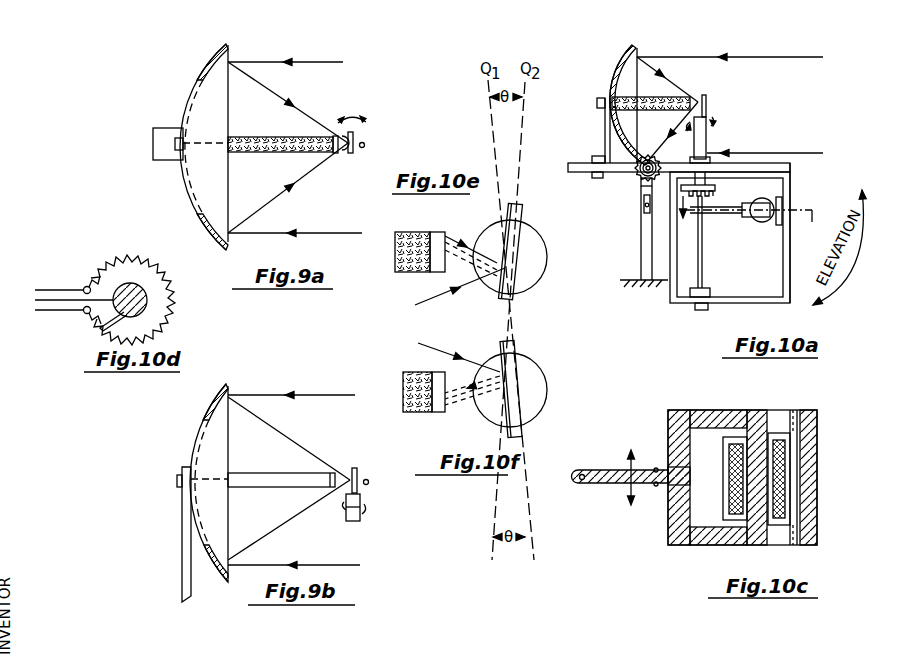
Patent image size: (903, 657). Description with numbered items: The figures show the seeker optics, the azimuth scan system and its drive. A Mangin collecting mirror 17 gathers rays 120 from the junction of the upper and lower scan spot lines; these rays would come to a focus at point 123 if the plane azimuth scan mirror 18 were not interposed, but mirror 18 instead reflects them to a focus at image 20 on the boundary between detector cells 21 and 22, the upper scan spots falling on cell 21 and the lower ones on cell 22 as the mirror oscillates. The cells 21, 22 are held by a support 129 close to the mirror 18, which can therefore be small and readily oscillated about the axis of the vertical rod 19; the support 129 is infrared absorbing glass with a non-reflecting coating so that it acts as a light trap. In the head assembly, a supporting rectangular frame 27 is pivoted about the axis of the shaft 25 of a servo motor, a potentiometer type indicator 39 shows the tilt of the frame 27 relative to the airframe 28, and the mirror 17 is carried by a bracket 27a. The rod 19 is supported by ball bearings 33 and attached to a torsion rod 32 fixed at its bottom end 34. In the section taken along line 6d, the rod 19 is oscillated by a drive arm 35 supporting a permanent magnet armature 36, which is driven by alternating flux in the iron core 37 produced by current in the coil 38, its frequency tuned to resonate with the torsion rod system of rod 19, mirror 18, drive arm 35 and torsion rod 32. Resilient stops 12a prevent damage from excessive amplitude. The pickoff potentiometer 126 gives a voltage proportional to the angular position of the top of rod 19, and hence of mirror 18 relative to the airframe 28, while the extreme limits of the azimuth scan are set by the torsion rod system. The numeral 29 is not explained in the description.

In FIG. 9a, the Mangin collecting mirror 17 is at (226, 48).
In FIG. 9b, the Mangin collecting mirror 17 is at (232, 384).
In FIG. 10a, the Mangin collecting mirror 17 is at (630, 50).
In FIG. 9a, the rays 120 is at (317, 60).
In FIG. 9b, the rays 120 is at (336, 394).
In FIG. 10a, the rays 120 is at (792, 57).
In FIG. 9a, the support 129 is at (256, 136).
In FIG. 9b, the support 129 is at (264, 472).
In FIG. 10e, the support 129 is at (426, 232).
In FIG. 10f, the support 129 is at (418, 372).
In FIG. 10a, the support 129 is at (642, 97).
In FIG. 9a, the image 20 is at (342, 110).
In FIG. 9a, the detector cell 21 is at (333, 150).
In FIG. 10a, the detector cell 21 is at (694, 96).
In FIG. 9a, the azimuth scan mirror 18 is at (355, 133).
In FIG. 9b, the azimuth scan mirror 18 is at (357, 468).
In FIG. 10e, the azimuth scan mirror 18 is at (522, 208).
In FIG. 10f, the azimuth scan mirror 18 is at (514, 343).
In FIG. 10a, the azimuth scan mirror 18 is at (707, 96).
In FIG. 9a, the rod 19 is at (356, 143).
In FIG. 10d, the rod 19 is at (140, 290).
In FIG. 9b, the rod 19 is at (366, 504).
In FIG. 10e, the rod 19 is at (547, 262).
In FIG. 10f, the rod 19 is at (548, 392).
In FIG. 10a, the rod 19 is at (710, 136).
In FIG. 10c, the rod 19 is at (586, 460).
In FIG. 9a, the focus point 123 is at (366, 147).
In FIG. 9b, the focus point 123 is at (370, 483).
In FIG. 10d, the potentiometer 126 is at (136, 256).
In FIG. 10a, the potentiometer 126 is at (717, 184).
In FIG. 9b, the detector cell 22 is at (340, 487).
In FIG. 10a, the detector cell 22 is at (664, 121).
In FIG. 9b, the adjustment 29 is at (346, 470).
In FIG. 10a, the bracket 27a is at (605, 128).
In FIG. 10a, the supporting rectangular frame 27 is at (790, 163).
In FIG. 10a, the ball bearings 33 is at (690, 157).
In FIG. 10a, the potentiometer type indicator 39 is at (638, 172).
In FIG. 10a, the shaft 25 is at (641, 184).
In FIG. 10a, the airframe 28 is at (641, 216).
In FIG. 10a, the torsion rod 32 is at (704, 258).
In FIG. 10a, the bottom end 34 is at (708, 304).
In FIG. 10a, the drive arm 35 is at (724, 214).
In FIG. 10a, the iron core 37 is at (752, 203).
In FIG. 10c, the iron core 37 is at (735, 410).
In FIG. 10a, the coil 38 is at (784, 198).
In FIG. 10c, the coil 38 is at (778, 440).
In FIG. 10c, the permanent magnet armature 36 is at (686, 474).
In FIG. 10c, the resilient stops 12a is at (656, 468).
In FIG. 10a, the section line 6d is at (748, 226).